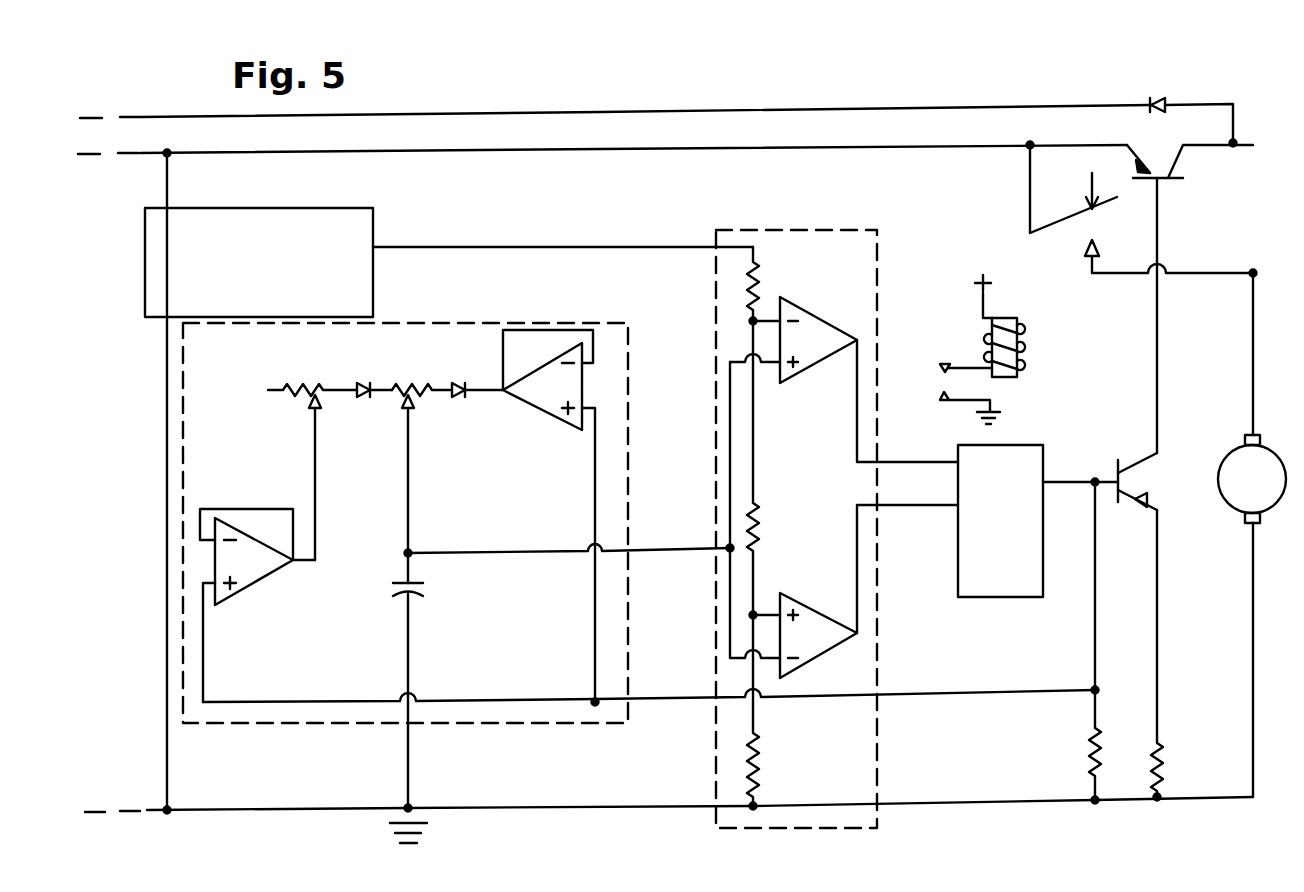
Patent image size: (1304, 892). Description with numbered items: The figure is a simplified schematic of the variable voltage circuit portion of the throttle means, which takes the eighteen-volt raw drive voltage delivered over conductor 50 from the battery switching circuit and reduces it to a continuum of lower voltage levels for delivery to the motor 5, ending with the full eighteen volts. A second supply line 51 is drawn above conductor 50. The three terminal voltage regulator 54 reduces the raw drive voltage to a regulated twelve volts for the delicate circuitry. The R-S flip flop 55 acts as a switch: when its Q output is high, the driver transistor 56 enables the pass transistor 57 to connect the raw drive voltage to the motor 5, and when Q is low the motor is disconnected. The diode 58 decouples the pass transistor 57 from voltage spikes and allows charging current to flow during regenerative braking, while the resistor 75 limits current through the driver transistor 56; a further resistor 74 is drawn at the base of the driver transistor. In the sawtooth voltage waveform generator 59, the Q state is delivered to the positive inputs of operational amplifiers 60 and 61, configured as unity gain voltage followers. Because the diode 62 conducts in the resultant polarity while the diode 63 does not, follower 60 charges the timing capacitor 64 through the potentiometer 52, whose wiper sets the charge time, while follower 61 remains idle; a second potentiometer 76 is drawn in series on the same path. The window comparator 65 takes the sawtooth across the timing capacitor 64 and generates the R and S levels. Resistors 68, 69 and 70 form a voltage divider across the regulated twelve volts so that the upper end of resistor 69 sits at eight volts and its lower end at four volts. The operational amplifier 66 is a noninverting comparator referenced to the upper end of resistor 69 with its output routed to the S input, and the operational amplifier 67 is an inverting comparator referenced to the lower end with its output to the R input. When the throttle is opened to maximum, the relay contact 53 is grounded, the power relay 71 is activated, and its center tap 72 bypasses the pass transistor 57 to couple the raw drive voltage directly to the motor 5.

The motor 5 is at (1215, 513).
The conductor 50 is at (565, 155).
The supply line 51 is at (565, 118).
The potentiometer 52 is at (385, 405).
The relay contact 53 is at (942, 364).
The three terminal voltage regulator 54 is at (375, 295).
The R-S flip flop 55 is at (998, 598).
The driver transistor 56 is at (1112, 474).
The pass transistor 57 is at (1165, 183).
The diode 58 is at (1142, 106).
The sawtooth voltage waveform generator 59 is at (305, 722).
The operational amplifier 60 is at (262, 590).
The operational amplifier 61 is at (552, 415).
The diode 62 is at (360, 386).
The diode 63 is at (454, 386).
The timing capacitor 64 is at (432, 590).
The window comparator 65 is at (792, 234).
The operational amplifier 66 is at (810, 370).
The operational amplifier 67 is at (818, 618).
The resistor 68 is at (758, 272).
The resistor 69 is at (758, 494).
The resistor 70 is at (758, 760).
The power relay 71 is at (1017, 320).
The center tap 72 is at (1093, 218).
The resistor 74 is at (1090, 695).
The resistor 75 is at (1158, 740).
The potentiometer 76 is at (273, 390).